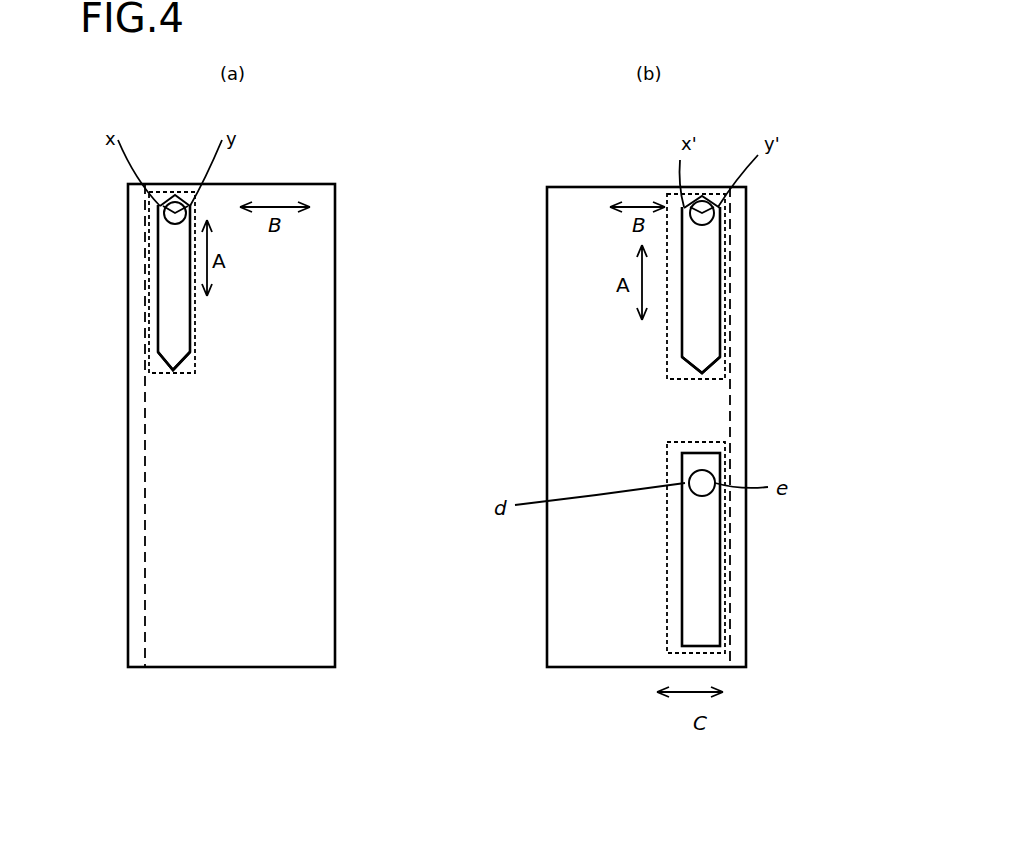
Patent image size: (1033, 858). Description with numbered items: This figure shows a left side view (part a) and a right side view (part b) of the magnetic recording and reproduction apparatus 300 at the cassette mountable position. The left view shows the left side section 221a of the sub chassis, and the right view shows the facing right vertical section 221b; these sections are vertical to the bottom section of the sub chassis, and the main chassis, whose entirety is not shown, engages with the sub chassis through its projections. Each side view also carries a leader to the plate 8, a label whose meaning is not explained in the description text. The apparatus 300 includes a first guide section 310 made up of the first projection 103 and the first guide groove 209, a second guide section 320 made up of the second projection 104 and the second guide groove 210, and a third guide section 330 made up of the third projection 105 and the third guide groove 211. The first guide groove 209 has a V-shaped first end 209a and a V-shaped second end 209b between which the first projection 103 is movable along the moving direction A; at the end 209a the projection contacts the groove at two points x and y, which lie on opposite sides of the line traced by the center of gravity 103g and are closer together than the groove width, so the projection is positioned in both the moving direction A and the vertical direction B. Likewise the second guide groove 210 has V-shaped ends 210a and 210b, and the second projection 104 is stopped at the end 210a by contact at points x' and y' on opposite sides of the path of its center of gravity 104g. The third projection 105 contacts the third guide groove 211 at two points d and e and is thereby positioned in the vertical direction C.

The magnetic recording and reproduction apparatus 300 is at (722, 34).
The casing plate 8 is at (245, 190).
The first projection 103 is at (173, 222).
The center of gravity of the first projection 103g is at (166, 214).
The first guide groove 209 is at (172, 307).
The first end of the first guide groove 209a is at (175, 196).
The second end of the first guide groove 209b is at (173, 370).
The first guide section 310 is at (175, 375).
The left side section 221a is at (215, 653).
The second projection 104 is at (705, 222).
The center of gravity of the second projection 104g is at (712, 215).
The second guide groove 210 is at (705, 312).
The first end of the second guide groove 210a is at (704, 198).
The second end of the second guide groove 210b is at (703, 373).
The second guide section 320 is at (703, 380).
The third guide section 330 is at (690, 437).
The third projection 105 is at (700, 478).
The third guide groove 211 is at (703, 583).
The right vertical section 221b is at (578, 657).